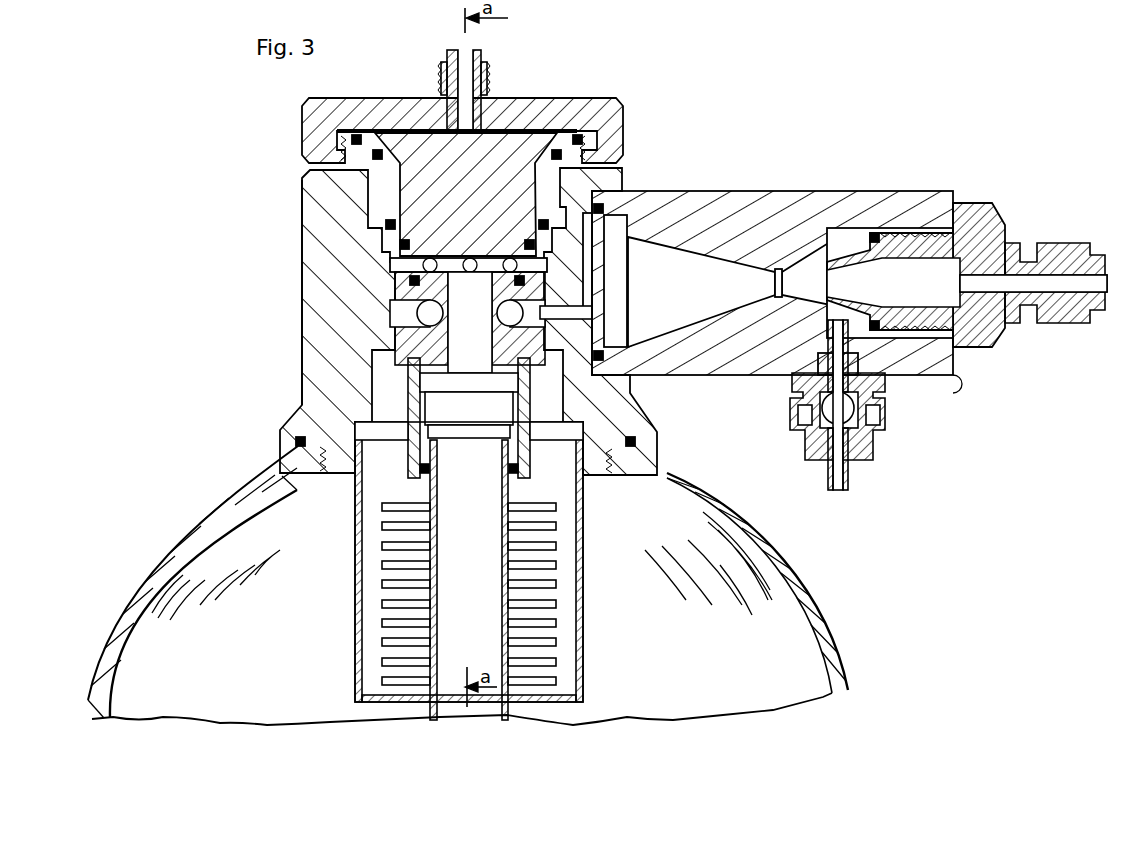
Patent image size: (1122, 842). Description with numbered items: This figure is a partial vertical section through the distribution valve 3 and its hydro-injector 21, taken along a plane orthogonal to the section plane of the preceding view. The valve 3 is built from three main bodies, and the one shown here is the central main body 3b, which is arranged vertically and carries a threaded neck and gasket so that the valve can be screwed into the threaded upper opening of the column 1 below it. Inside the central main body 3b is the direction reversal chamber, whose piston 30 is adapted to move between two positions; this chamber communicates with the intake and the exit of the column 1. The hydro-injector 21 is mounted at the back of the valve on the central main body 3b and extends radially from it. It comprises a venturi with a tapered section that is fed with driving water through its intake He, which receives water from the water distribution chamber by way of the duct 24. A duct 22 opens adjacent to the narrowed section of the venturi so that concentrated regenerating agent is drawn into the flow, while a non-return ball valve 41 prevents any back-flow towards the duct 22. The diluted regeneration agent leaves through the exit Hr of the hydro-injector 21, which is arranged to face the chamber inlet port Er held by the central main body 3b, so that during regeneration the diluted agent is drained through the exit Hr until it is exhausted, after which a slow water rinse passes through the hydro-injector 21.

The column 1 is at (214, 494).
The distribution valve 3 is at (290, 323).
The central main body 3b is at (310, 263).
The piston 30 is at (468, 220).
The hydro-injector 21 is at (776, 198).
The duct 22 is at (850, 488).
The duct 24 is at (1094, 248).
The non-return ball valve 41 is at (876, 431).
The chamber inlet port Er is at (584, 307).
The exit of the hydro-injector Hr is at (624, 314).
The driving water intake He is at (963, 296).